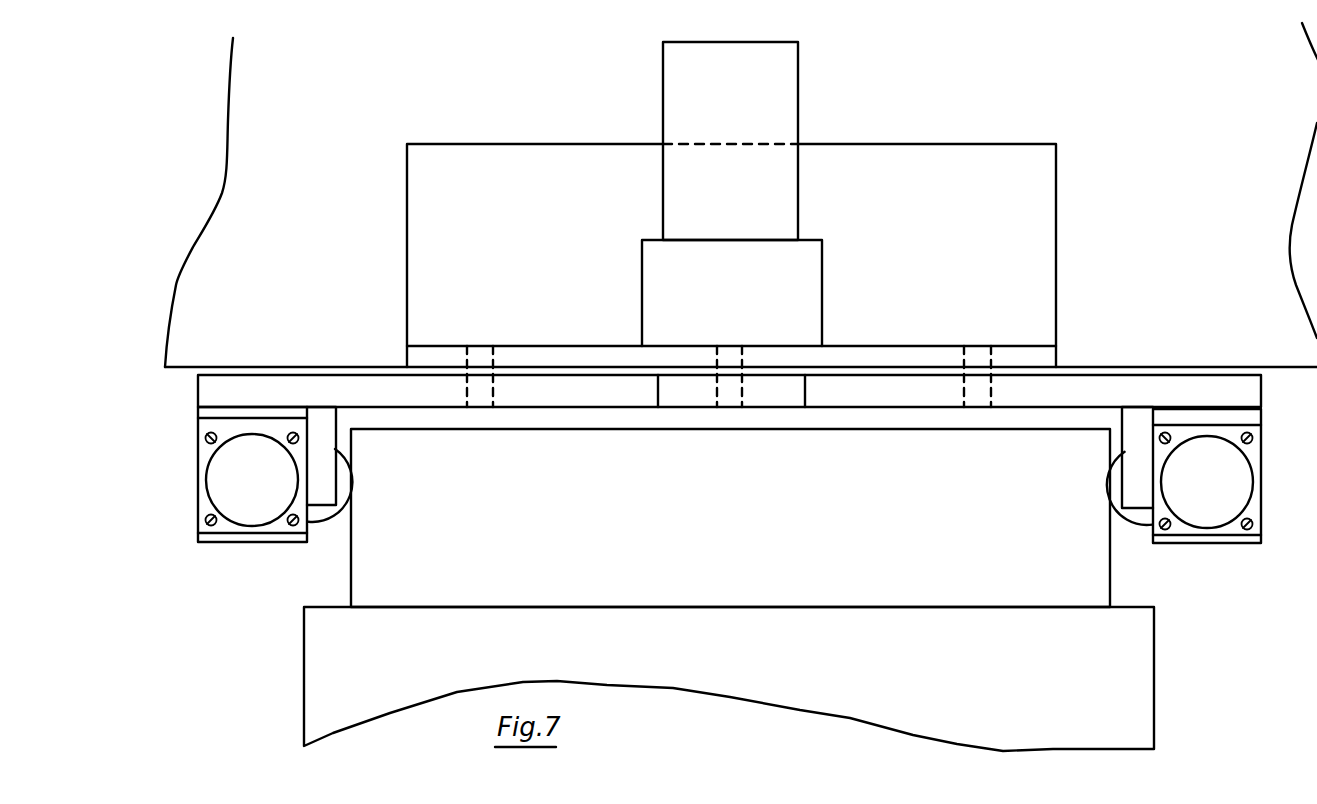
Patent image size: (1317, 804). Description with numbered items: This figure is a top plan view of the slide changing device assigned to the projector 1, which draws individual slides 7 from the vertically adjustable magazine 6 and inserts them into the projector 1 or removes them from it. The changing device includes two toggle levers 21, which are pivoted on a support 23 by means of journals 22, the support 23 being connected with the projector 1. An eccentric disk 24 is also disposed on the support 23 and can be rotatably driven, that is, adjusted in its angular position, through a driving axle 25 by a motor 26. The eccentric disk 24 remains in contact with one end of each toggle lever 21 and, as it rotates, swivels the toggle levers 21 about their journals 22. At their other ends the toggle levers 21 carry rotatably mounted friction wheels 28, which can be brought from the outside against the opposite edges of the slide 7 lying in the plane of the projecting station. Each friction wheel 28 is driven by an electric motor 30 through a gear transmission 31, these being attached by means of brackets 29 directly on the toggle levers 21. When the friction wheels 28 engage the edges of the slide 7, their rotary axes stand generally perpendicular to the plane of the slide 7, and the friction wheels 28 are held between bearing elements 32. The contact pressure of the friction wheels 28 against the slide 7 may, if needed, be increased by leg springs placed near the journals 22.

The projector 1 is at (330, 252).
The magazine 6 is at (1005, 697).
The slide 7 is at (560, 543).
The toggle lever 21 is at (1152, 388).
The journal 22 is at (980, 361).
The support 23 is at (1038, 228).
The eccentric disk 24 is at (775, 397).
The driving axle 25 is at (730, 345).
The motor 26 is at (777, 91).
The friction wheel 28 is at (347, 487).
The bracket 29 is at (1225, 417).
The electric motor 30 is at (1217, 513).
The gear transmission 31 is at (1143, 513).
The bearing element 32 is at (1140, 435).